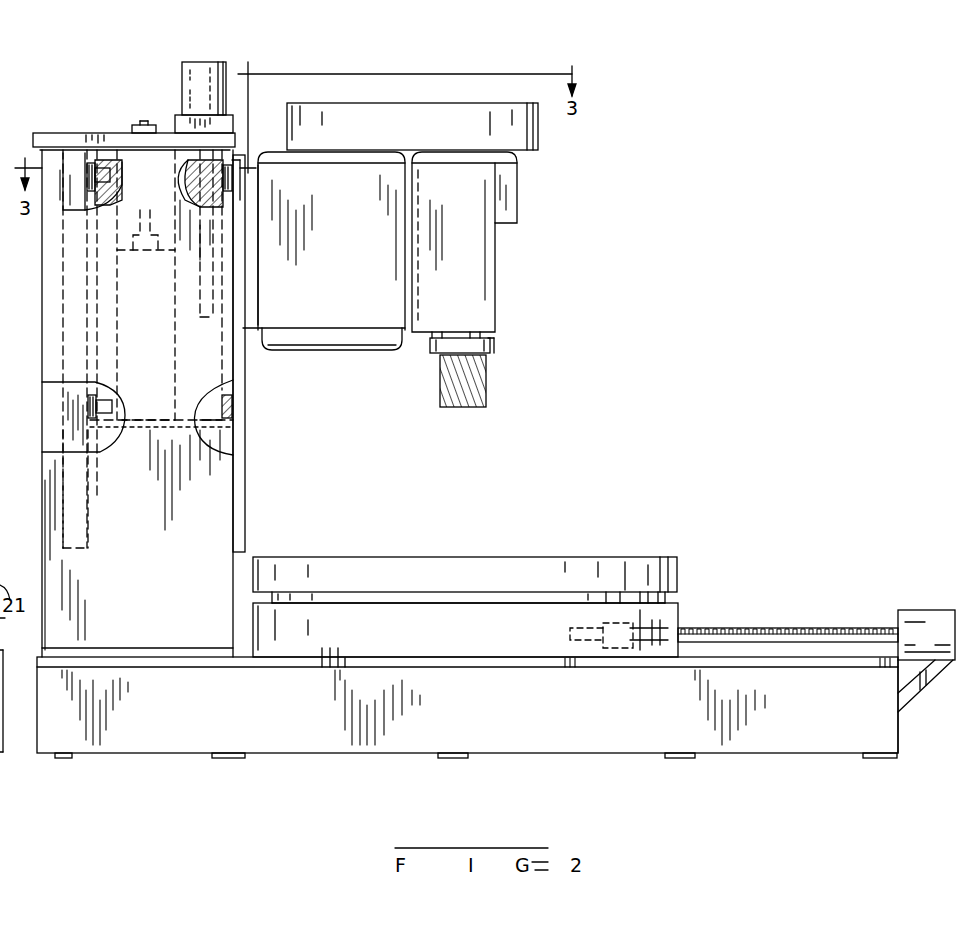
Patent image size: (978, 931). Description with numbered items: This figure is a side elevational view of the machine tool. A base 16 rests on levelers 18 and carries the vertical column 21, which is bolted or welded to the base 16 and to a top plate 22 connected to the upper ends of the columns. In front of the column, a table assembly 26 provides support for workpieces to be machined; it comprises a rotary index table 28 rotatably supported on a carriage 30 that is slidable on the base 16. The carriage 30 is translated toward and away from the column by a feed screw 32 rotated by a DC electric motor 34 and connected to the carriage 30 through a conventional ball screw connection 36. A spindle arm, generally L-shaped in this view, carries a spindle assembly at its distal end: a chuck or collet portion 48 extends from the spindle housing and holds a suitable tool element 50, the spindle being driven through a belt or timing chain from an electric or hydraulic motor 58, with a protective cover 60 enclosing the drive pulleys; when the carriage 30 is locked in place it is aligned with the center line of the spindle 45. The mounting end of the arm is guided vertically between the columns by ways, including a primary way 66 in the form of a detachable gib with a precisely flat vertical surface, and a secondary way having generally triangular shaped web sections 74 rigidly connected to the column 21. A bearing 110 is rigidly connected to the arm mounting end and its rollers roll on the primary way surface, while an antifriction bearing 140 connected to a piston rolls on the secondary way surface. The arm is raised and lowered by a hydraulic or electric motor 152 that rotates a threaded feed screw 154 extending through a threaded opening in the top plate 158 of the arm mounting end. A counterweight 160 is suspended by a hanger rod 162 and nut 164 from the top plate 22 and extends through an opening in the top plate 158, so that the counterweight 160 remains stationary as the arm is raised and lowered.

The base 16 is at (600, 730).
The levelers 18 is at (57, 758).
The vertical column 21 is at (218, 500).
The top plate 22 is at (48, 135).
The table assembly 26 is at (688, 550).
The rotary index table 28 is at (460, 566).
The carriage 30 is at (380, 620).
The feed screw 32 is at (786, 630).
The DC electric motor 34 is at (915, 614).
The ball screw connection 36 is at (612, 620).
The spindle 45 is at (500, 250).
The chuck or collet portion 48 is at (492, 346).
The tool element 50 is at (478, 385).
The electric or hydraulic motor 58 is at (340, 337).
The protective cover 60 is at (540, 130).
The primary way 66 is at (240, 455).
The web sections 74 is at (92, 520).
The bearing 110 is at (232, 190).
The antifriction bearing 140 is at (105, 170).
The hydraulic or electric motor 152 is at (204, 75).
The threaded feed screw 154 is at (250, 285).
The top plate of spindle arm mounting end 158 is at (112, 170).
The counterweight 160 is at (115, 315).
The hanger rod 162 is at (135, 215).
The nut 164 is at (152, 126).